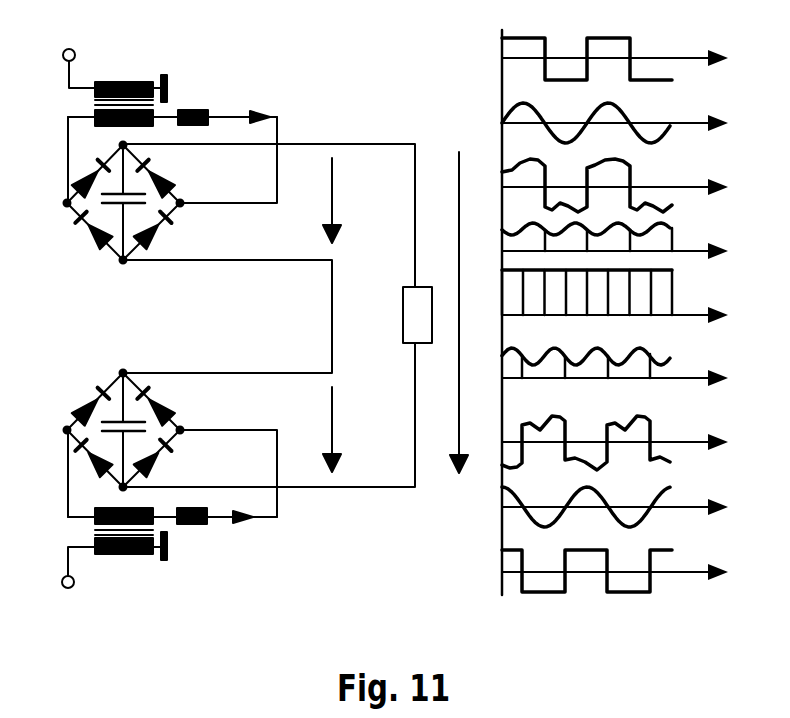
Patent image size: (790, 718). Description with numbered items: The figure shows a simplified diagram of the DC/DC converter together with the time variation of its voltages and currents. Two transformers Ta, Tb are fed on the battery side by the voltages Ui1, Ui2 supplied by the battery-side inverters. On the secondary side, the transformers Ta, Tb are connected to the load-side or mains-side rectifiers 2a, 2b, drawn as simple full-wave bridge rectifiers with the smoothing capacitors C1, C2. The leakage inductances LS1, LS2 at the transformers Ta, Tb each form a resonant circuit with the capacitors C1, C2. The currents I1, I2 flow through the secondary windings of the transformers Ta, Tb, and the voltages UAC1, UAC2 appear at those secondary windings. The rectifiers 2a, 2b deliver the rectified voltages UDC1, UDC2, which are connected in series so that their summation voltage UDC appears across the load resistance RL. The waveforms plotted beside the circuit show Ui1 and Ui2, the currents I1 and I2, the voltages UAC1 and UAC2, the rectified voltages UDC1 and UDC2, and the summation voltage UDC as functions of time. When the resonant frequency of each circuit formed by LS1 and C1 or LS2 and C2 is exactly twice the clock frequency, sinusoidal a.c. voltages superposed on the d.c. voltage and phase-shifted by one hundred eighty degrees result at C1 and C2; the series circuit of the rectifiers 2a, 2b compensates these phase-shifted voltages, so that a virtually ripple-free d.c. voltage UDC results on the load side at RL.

The rectifier 2a is at (160, 193).
The rectifier 2b is at (160, 444).
The smoothing capacitor C1 is at (118, 207).
The smoothing capacitor C2 is at (117, 420).
The transformer Ta is at (97, 100).
The transformer Tb is at (97, 534).
The leakage inductance LS1 is at (172, 105).
The leakage inductance LS2 is at (172, 534).
The load resistance RL is at (401, 315).
The voltage Ui1 is at (500, 58).
The voltage Ui2 is at (500, 572).
The current I1 is at (500, 123).
The current I2 is at (500, 510).
The voltage UAC1 is at (500, 187).
The voltage UAC2 is at (500, 445).
The rectified voltage UDC1 is at (500, 238).
The rectified voltage UDC2 is at (500, 381).
The summation voltage UDC is at (459, 312).